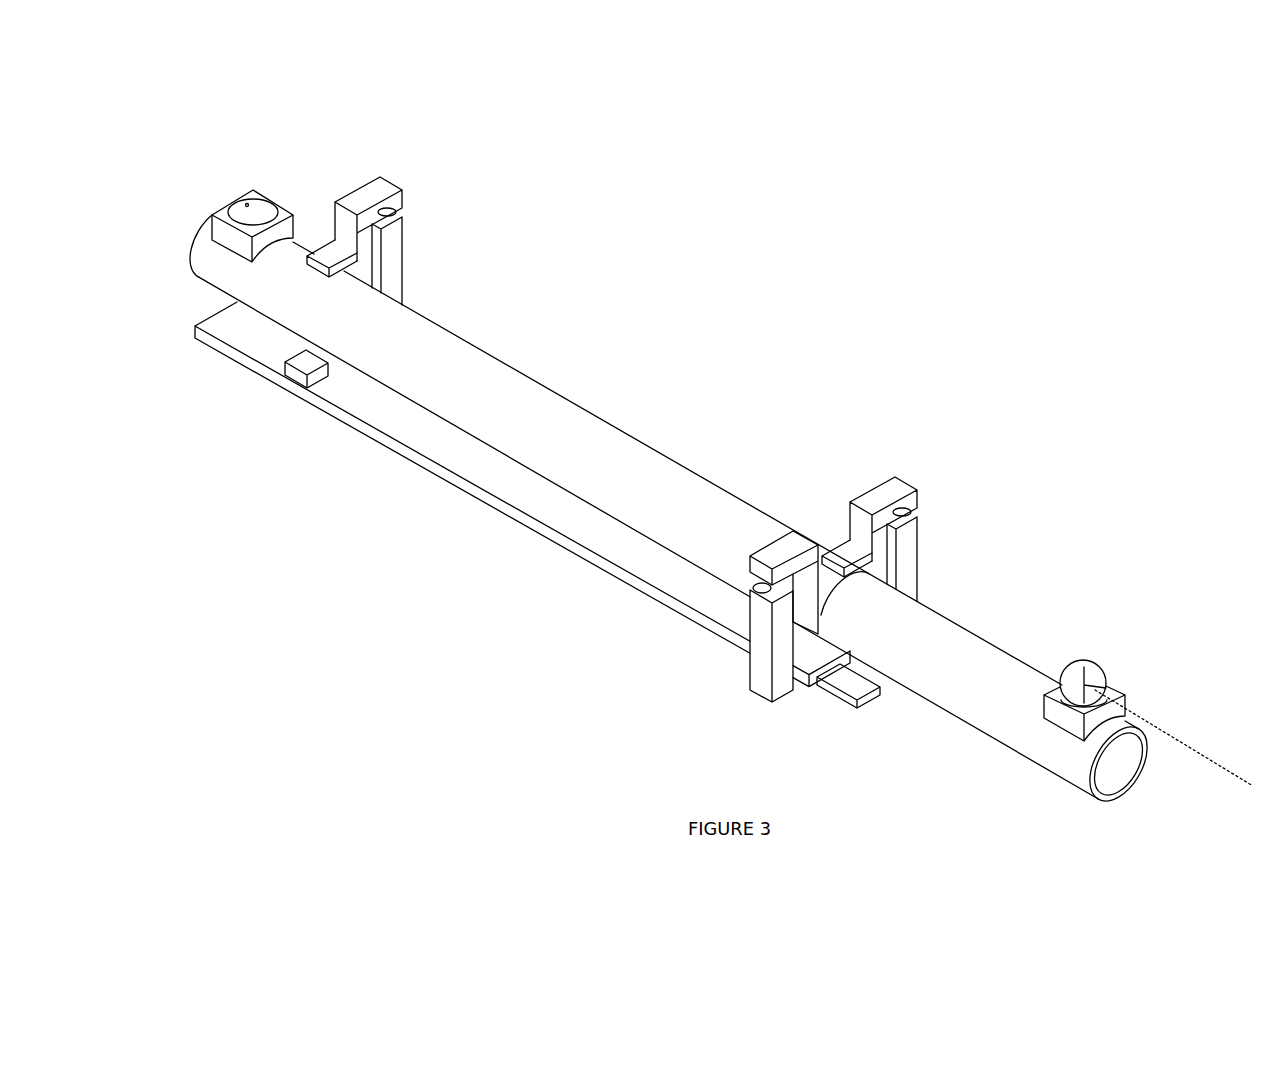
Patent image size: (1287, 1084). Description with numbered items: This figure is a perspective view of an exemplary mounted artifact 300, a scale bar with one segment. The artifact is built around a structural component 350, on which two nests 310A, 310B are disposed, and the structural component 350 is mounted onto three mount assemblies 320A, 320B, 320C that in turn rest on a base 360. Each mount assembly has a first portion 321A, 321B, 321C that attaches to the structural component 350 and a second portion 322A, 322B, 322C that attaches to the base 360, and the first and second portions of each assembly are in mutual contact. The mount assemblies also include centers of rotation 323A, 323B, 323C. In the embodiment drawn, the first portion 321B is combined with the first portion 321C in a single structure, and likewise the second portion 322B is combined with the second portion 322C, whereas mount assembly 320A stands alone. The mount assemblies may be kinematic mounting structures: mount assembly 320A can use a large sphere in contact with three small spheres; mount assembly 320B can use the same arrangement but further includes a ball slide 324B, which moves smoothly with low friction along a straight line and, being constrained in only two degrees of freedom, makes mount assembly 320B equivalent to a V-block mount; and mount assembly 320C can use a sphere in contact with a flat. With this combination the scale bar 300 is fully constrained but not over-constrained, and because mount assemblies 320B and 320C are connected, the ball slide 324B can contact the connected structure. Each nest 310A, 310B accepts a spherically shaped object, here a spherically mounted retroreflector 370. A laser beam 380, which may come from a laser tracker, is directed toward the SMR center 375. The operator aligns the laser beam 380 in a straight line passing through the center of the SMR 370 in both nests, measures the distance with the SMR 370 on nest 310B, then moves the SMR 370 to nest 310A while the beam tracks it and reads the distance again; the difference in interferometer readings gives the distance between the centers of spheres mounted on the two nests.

The mounted artifact 300 is at (660, 73).
The nest 310A is at (252, 190).
The nest 310B is at (1043, 698).
The mount assembly 320A is at (490, 168).
The mount assembly 320B is at (640, 655).
The mount assembly 320C is at (1040, 487).
The first portion 321A is at (352, 191).
The first portion 321B is at (748, 556).
The first portion 321C is at (886, 484).
The second portion 322A is at (404, 270).
The second portion 322B is at (746, 668).
The second portion 322C is at (920, 578).
The center of rotation 323A is at (398, 209).
The center of rotation 323B is at (750, 593).
The center of rotation 323C is at (918, 511).
The ball slide 324B is at (836, 692).
The structural component 350 is at (586, 410).
The base 360 is at (546, 537).
The spherically mounted retroreflector 370 is at (1086, 661).
The SMR center 375 is at (1106, 674).
The laser beam 380 is at (1187, 743).